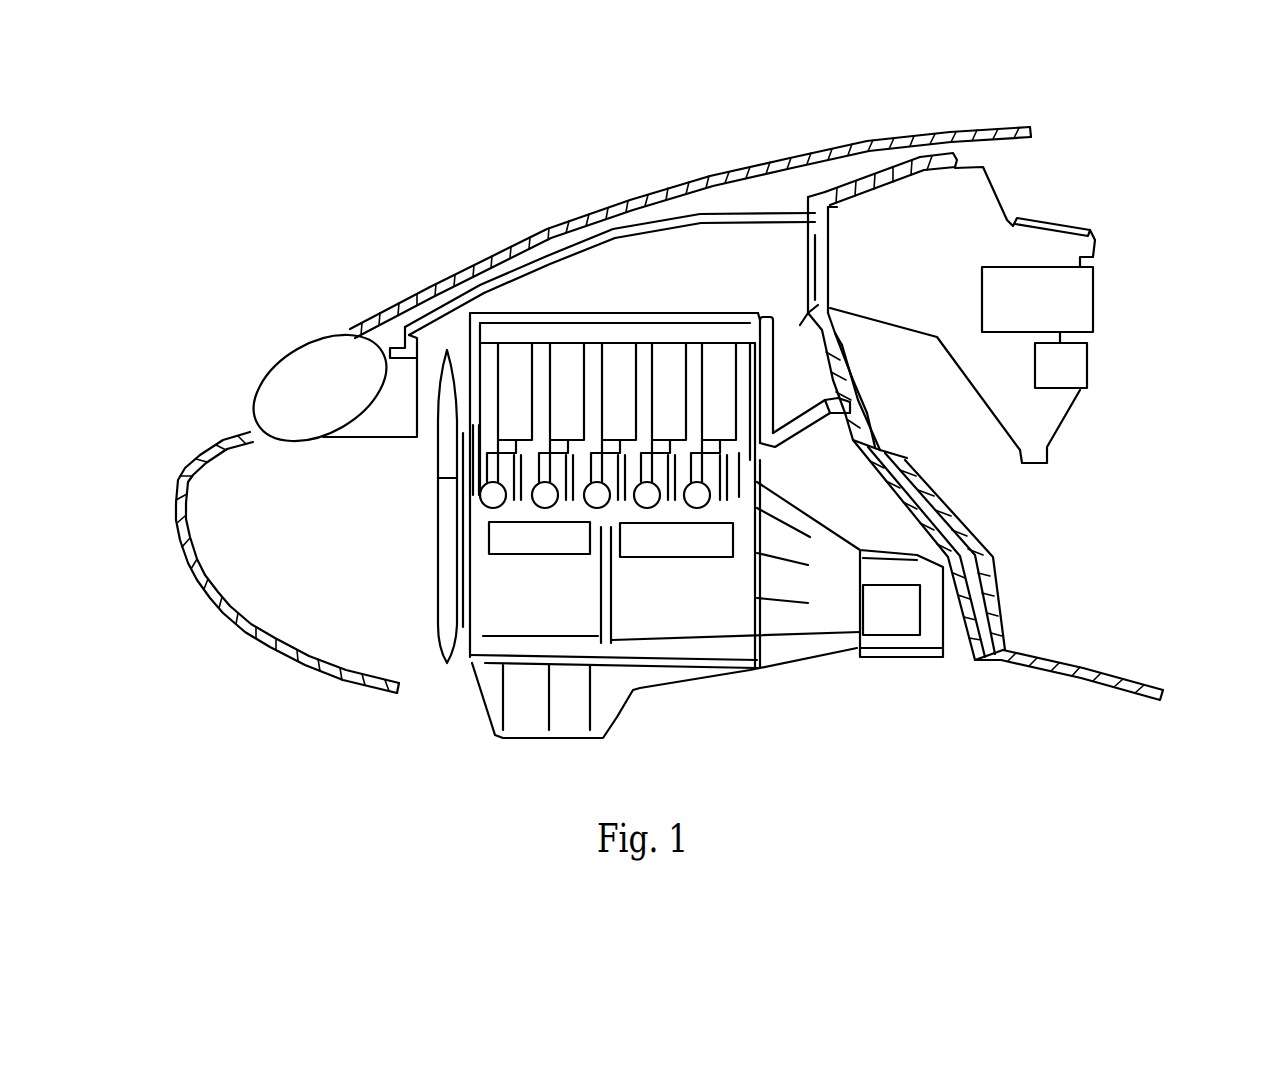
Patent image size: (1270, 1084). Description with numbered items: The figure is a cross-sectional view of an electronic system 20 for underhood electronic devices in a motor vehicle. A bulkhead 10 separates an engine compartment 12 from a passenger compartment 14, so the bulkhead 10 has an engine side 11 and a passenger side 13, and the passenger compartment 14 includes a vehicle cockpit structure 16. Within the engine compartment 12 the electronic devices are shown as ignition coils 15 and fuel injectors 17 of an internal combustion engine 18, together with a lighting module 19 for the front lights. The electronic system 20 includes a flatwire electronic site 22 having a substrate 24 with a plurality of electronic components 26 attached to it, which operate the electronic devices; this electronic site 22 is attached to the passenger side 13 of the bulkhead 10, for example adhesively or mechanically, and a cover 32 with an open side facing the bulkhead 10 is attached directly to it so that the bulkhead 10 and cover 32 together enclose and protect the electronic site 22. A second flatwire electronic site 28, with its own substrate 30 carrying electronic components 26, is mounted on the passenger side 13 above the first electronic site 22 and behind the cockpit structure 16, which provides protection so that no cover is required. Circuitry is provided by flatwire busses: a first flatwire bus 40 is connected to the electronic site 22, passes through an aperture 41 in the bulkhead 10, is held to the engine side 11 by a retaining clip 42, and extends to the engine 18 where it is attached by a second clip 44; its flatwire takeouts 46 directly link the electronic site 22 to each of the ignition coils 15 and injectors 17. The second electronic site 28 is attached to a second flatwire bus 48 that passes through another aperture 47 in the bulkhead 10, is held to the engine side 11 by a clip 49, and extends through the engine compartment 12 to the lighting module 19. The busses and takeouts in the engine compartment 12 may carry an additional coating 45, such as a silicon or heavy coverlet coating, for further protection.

The bulkhead 10 is at (850, 192).
The engine side 11 is at (814, 198).
The engine compartment 12 is at (683, 283).
The passenger side 13 is at (836, 338).
The passenger compartment 14 is at (1154, 327).
The ignition coils 15 is at (487, 503).
The vehicle cockpit structure 16 is at (1007, 199).
The fuel injectors 17 is at (528, 505).
The internal combustion engine 18 is at (672, 669).
The lighting module 19 is at (278, 348).
The electronic system 20 is at (1118, 605).
The flatwire electronic site 22 is at (1003, 663).
The substrate 24 is at (953, 537).
The electronic components 26 is at (845, 487).
The second flatwire electronic site 28 is at (878, 392).
The substrate 30 is at (863, 378).
The cover 32 is at (1007, 620).
The first flatwire bus 40 is at (565, 335).
The aperture 41 is at (870, 423).
The retaining clip 42 is at (848, 423).
The second clip 44 is at (868, 415).
The additional coating 45 is at (724, 340).
The flatwire takeouts 46 is at (490, 357).
The aperture 47 is at (813, 340).
The second flatwire bus 48 is at (822, 322).
The clip 49 is at (818, 305).